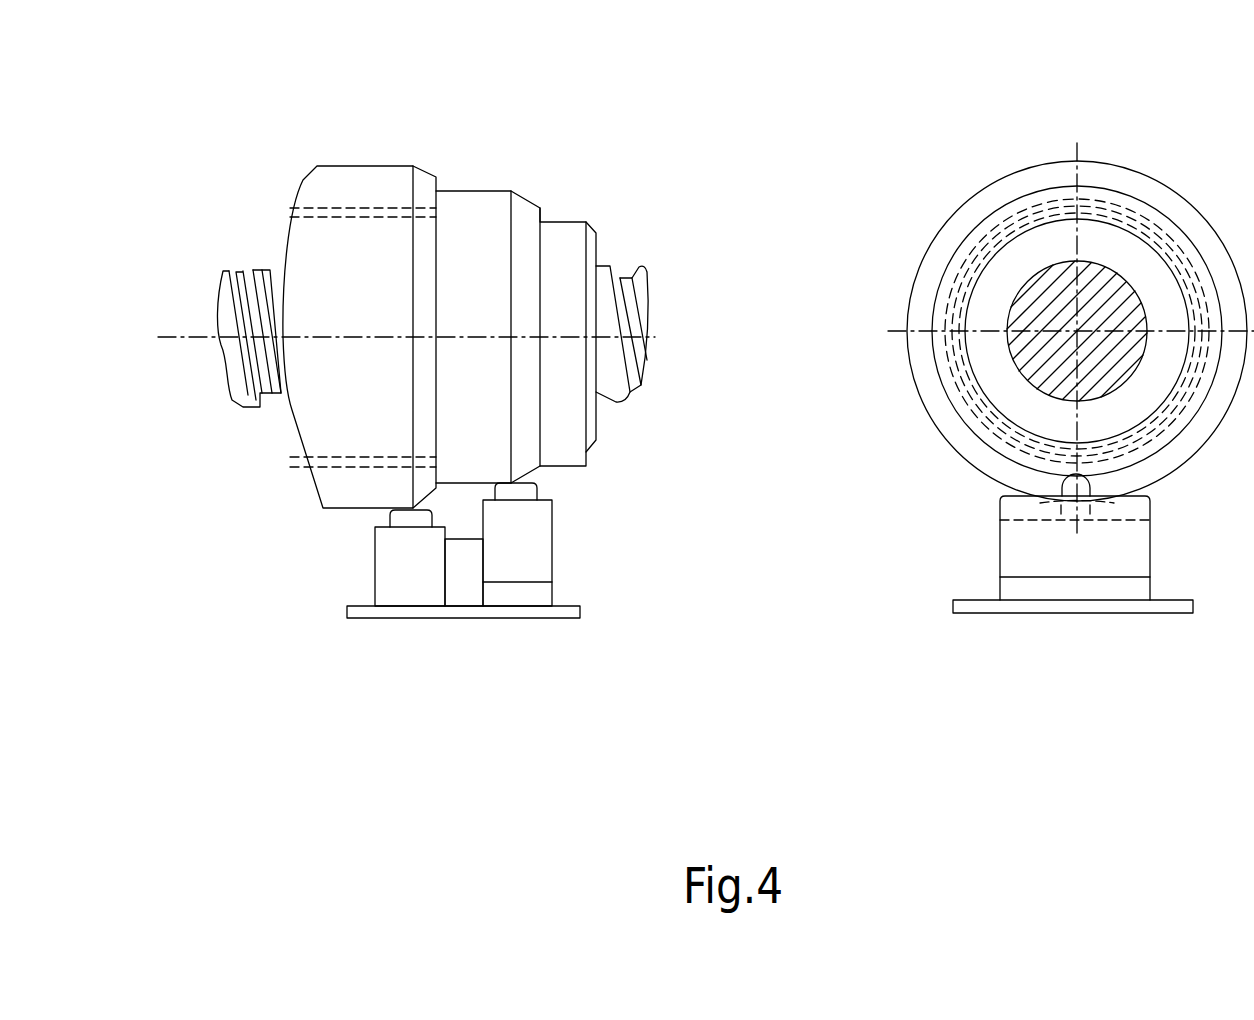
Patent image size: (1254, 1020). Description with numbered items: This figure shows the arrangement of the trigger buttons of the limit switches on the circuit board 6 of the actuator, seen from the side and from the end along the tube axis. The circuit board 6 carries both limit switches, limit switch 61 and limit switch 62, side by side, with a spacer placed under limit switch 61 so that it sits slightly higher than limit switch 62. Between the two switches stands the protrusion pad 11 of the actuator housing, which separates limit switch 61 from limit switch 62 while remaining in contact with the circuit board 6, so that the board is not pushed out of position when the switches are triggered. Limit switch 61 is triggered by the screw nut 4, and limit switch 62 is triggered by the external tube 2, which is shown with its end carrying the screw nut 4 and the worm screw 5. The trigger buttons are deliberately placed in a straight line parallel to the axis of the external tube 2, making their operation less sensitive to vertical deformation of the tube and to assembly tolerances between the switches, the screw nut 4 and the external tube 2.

The external tube 2 is at (358, 193).
The screw nut 4 is at (487, 253).
The worm screw 5 is at (247, 297).
The circuit board 6 is at (522, 612).
The limit switch 61 is at (522, 555).
The limit switch 62 is at (407, 557).
The protrusion pad 11 is at (465, 577).